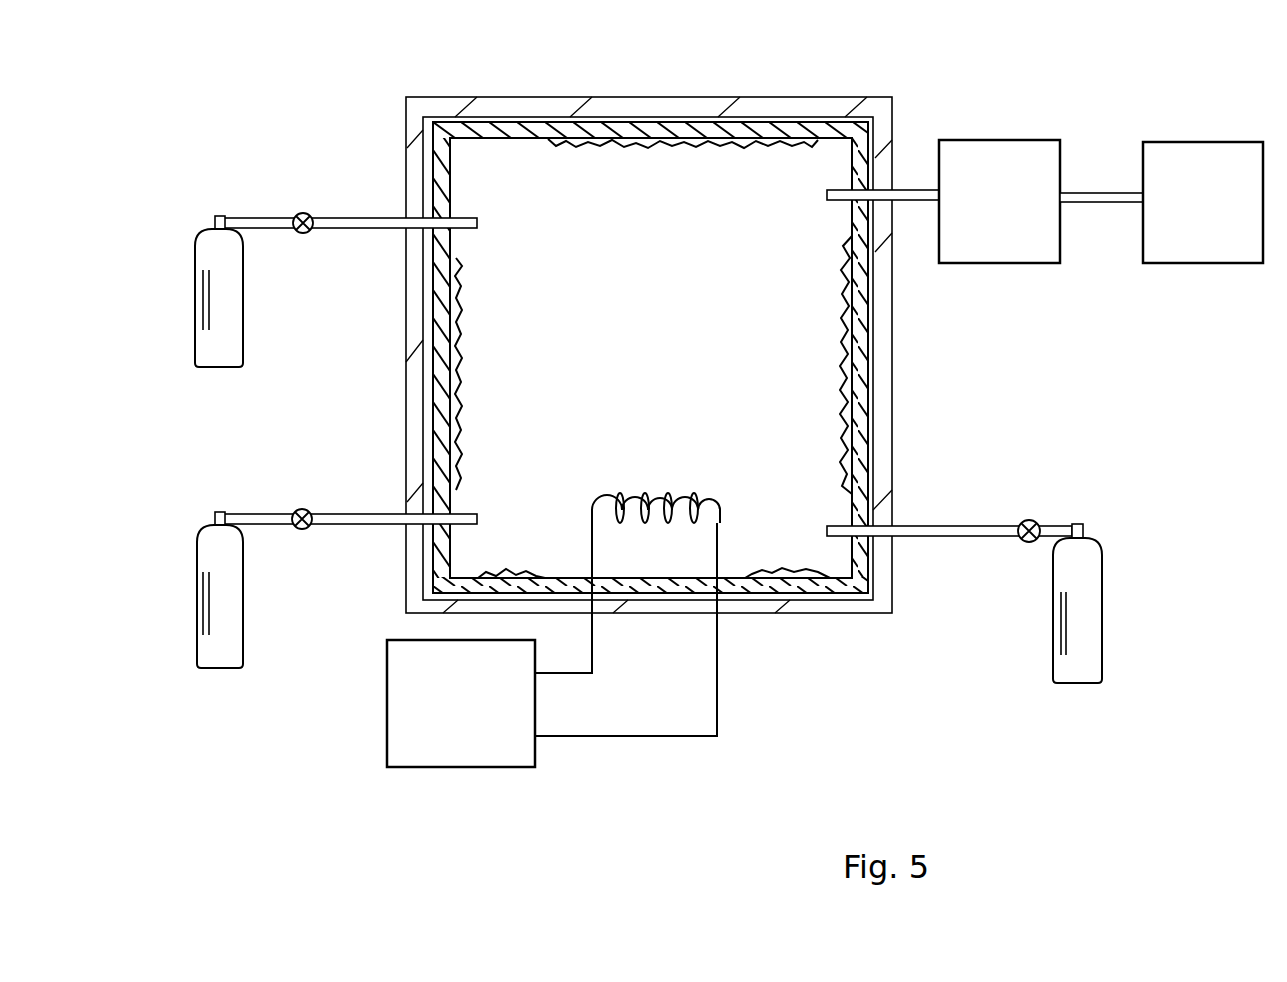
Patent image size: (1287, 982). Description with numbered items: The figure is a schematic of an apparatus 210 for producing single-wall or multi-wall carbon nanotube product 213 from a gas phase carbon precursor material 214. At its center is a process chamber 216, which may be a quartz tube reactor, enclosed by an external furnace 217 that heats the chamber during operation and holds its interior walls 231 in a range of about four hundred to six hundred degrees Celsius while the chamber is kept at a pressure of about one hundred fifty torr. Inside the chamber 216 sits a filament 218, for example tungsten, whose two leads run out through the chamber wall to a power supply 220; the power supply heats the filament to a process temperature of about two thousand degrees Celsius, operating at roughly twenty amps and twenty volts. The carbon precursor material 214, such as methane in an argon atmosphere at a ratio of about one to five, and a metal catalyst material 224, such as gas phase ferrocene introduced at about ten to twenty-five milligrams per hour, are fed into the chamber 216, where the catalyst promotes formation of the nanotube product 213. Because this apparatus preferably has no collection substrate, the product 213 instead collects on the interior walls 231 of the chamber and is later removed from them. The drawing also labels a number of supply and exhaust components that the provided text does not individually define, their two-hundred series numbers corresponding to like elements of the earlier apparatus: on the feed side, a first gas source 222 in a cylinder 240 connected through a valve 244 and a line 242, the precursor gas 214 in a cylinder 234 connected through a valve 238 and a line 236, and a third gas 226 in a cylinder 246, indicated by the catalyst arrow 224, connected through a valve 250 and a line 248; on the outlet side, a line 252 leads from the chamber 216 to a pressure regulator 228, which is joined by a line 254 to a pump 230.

The apparatus 210 is at (352, 116).
The carbon nanotube product 213 is at (462, 297).
The gas phase carbon precursor material 214 is at (224, 603).
The process chamber 216 is at (681, 122).
The furnace 217 is at (642, 97).
The filament 218 is at (596, 496).
The power supply 220 is at (447, 768).
The first gas 222 is at (224, 300).
The metal catalyst material 224 is at (1046, 587).
The third gas 226 is at (825, 787).
The pressure regulator 228 is at (1010, 264).
The pump 230 is at (1213, 264).
The interior walls 231 is at (450, 568).
The second gas cylinder 234 is at (196, 582).
The second gas line 236 is at (380, 527).
The second valve 238 is at (298, 510).
The first gas cylinder 240 is at (193, 263).
The first gas line 242 is at (372, 232).
The first valve 244 is at (300, 212).
The third gas cylinder 246 is at (1100, 668).
The third gas line 248 is at (958, 482).
The third valve 250 is at (1027, 520).
The exhaust line 252 is at (915, 190).
The pump line 254 is at (1097, 192).